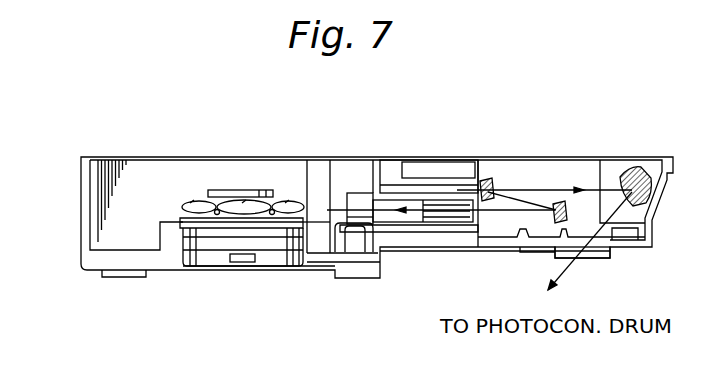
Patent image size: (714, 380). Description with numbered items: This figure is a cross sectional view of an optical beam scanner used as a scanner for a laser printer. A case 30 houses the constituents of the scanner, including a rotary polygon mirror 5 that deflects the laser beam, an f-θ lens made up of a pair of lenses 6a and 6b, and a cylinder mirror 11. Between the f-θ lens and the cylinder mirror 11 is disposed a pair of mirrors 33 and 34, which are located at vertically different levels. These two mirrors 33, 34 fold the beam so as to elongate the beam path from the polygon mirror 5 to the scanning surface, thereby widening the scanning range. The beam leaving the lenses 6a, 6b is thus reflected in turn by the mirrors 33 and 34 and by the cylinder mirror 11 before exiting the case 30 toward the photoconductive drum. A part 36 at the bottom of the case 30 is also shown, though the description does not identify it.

The case 30 is at (80, 229).
The rotary polygon mirror 5 is at (296, 204).
The lens 6a is at (360, 217).
The lens 6b is at (446, 217).
The mirror 33 is at (486, 178).
The mirror 34 is at (561, 200).
The cylinder mirror 11 is at (632, 168).
The bracket 36 is at (598, 259).